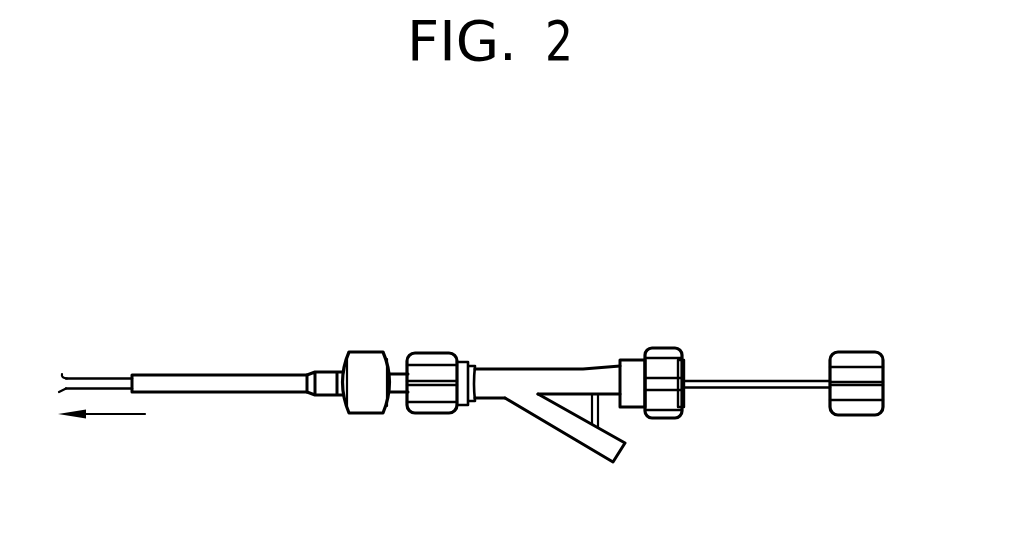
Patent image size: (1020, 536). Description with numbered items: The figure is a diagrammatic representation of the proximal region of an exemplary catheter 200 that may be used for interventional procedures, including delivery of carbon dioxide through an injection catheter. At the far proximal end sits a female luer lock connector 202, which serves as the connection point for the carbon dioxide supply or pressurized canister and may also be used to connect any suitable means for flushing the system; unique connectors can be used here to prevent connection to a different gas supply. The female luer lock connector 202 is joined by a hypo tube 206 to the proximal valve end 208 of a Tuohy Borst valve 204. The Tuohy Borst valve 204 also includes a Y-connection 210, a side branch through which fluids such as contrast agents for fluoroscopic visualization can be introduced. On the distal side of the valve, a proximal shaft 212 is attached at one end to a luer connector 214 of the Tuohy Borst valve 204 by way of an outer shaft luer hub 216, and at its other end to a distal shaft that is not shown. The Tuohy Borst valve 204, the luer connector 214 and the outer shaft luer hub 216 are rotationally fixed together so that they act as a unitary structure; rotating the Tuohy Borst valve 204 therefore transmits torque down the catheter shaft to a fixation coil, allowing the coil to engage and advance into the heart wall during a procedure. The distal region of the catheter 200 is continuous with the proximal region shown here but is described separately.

The catheter 200 is at (361, 235).
The female luer lock connector 202 is at (867, 353).
The Tuohy Borst valve 204 is at (581, 366).
The hypo tube 206 is at (763, 380).
The proximal valve end 208 is at (665, 348).
The Y-connection 210 is at (600, 457).
The proximal shaft 212 is at (84, 378).
The luer connector 214 is at (435, 353).
The outer shaft luer hub 216 is at (367, 353).